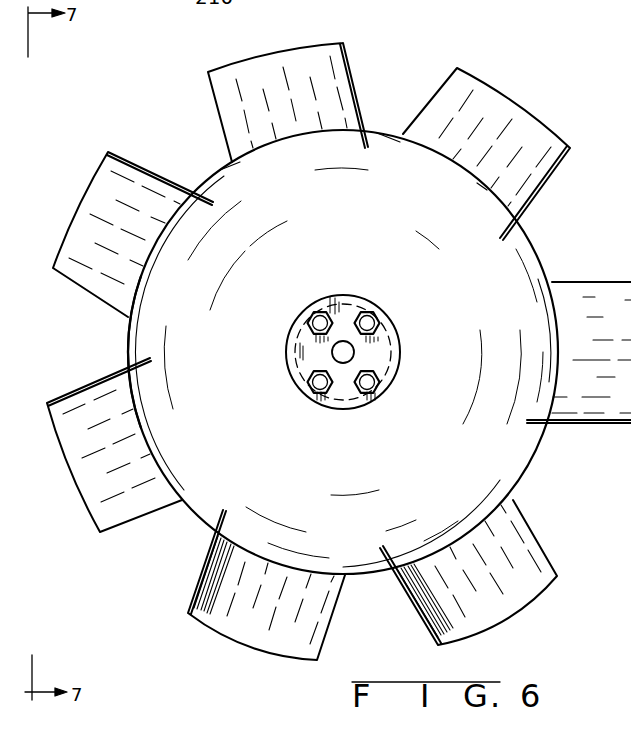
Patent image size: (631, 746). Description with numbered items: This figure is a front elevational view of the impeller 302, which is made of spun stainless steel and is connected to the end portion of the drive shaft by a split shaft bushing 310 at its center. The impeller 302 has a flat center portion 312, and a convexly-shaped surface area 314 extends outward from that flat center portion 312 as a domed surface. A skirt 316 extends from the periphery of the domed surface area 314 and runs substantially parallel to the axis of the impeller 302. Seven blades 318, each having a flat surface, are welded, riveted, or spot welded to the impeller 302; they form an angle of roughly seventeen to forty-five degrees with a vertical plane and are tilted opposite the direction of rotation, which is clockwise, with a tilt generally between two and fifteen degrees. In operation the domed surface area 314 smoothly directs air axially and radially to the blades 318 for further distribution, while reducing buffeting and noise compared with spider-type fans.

The impeller 302 is at (513, 258).
The split shaft bushing 310 is at (333, 350).
The flat center portion 312 is at (385, 352).
The convexly-shaped surface area 314 is at (168, 332).
The skirt 316 is at (208, 175).
The blades 318 is at (307, 52).